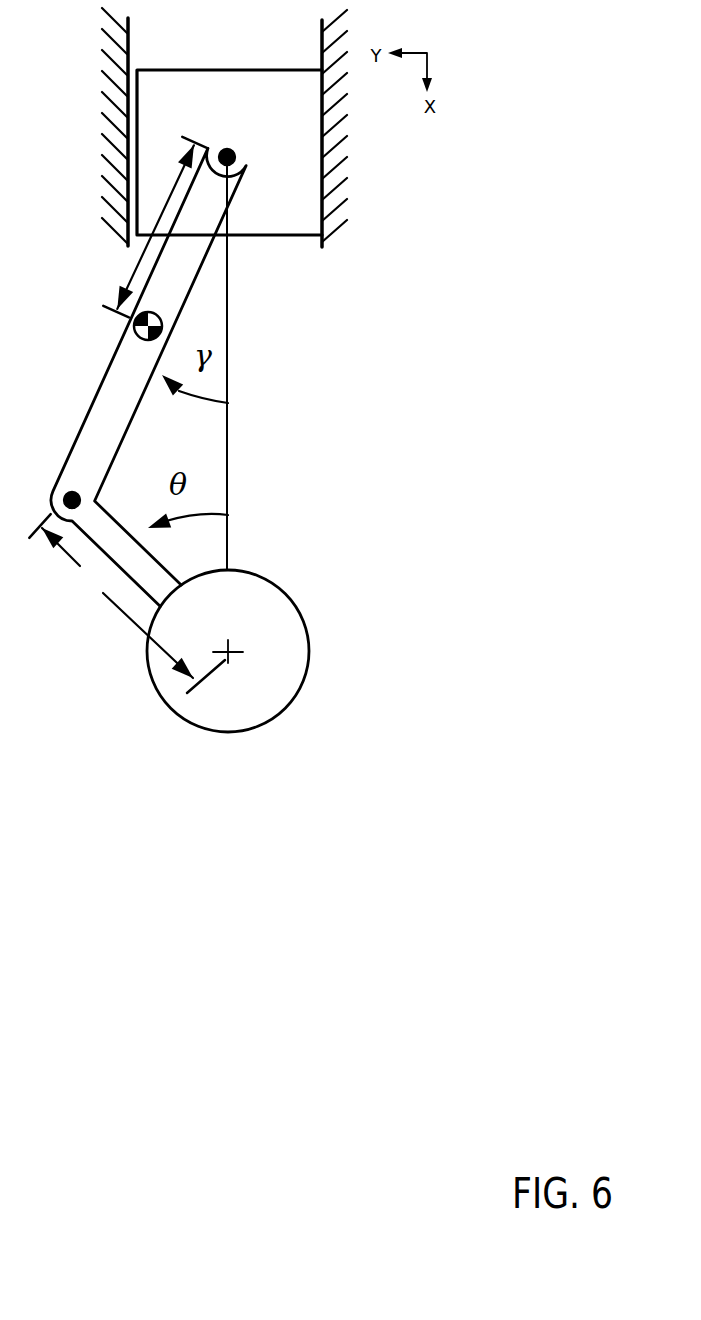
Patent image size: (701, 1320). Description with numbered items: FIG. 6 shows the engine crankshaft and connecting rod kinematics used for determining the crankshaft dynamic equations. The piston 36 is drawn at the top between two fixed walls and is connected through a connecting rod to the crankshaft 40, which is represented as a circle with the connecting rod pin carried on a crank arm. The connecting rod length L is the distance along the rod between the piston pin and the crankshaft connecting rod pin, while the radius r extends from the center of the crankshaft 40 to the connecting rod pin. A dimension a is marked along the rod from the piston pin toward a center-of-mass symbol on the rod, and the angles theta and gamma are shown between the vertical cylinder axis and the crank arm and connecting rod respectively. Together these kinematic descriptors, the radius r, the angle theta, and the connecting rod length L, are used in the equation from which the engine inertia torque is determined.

The piston 36 is at (297, 220).
The crankshaft 40 is at (180, 717).
The connecting rod length L is at (148, 377).
The connecting rod center of mass distance a is at (155, 238).
The crankshaft radius r is at (127, 603).